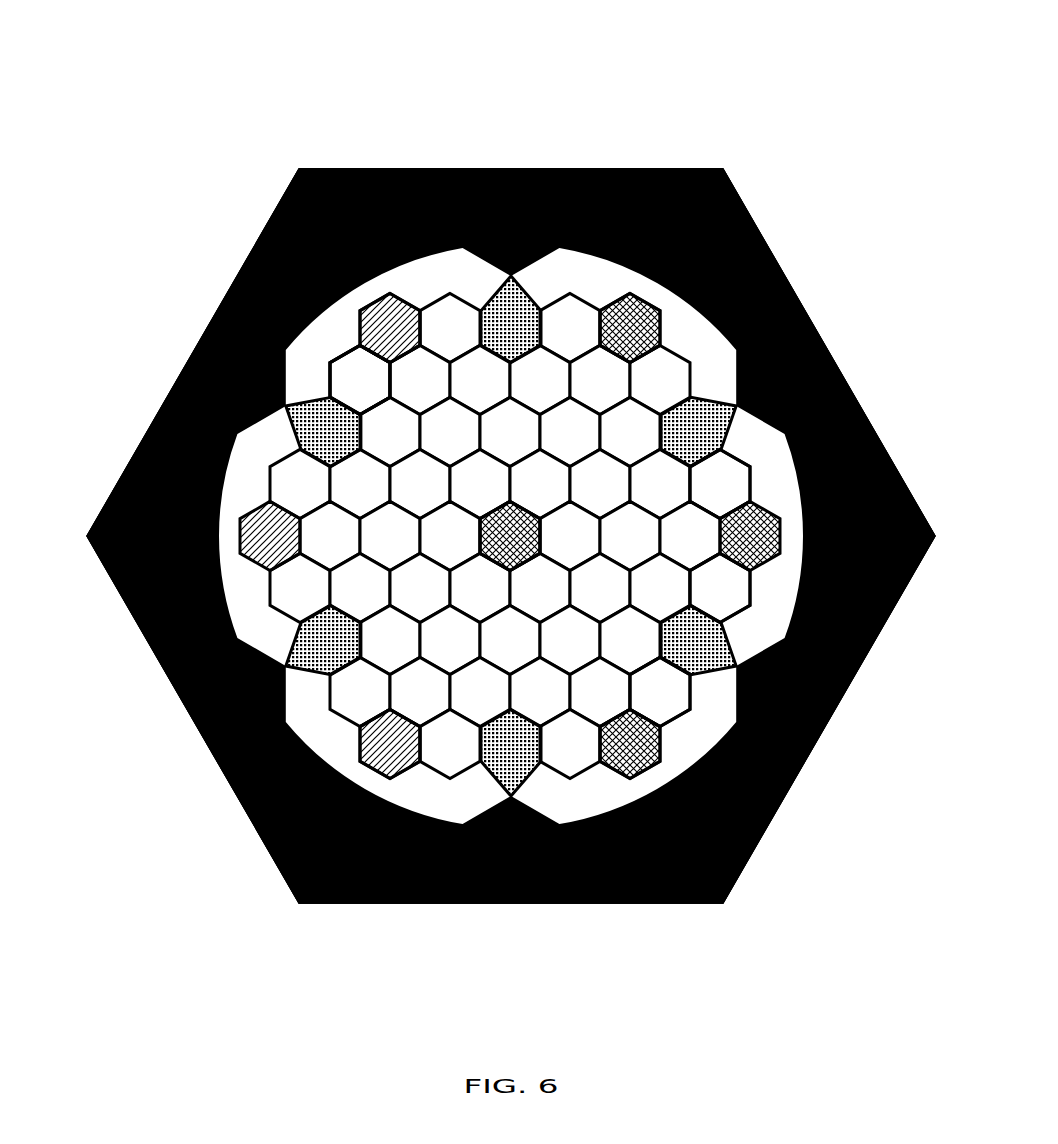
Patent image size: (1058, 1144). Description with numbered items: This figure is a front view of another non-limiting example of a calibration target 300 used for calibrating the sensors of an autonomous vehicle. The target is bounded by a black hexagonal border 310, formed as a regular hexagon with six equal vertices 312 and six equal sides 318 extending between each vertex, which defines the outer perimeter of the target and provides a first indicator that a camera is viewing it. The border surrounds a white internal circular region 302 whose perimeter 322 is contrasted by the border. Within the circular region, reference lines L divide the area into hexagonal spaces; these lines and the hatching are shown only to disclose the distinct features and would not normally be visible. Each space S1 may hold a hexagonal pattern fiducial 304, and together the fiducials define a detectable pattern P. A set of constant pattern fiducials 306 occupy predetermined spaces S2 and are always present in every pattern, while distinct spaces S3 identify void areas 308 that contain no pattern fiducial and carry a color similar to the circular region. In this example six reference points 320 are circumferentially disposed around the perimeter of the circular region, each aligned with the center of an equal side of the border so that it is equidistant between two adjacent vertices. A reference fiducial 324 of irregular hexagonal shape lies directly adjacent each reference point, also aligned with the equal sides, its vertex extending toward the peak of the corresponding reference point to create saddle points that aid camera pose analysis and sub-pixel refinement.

The calibration target 300 is at (490, 76).
The internal circular region 302 is at (705, 337).
The pattern fiducials 304 is at (334, 384).
The constant pattern fiducials 306 is at (395, 302).
The void areas 308 is at (640, 302).
The hexagonal border 310 is at (586, 170).
The vertices 312 is at (288, 160).
The equal sides 318 is at (503, 158).
The reference points 320 is at (262, 400).
The perimeter 322 is at (549, 243).
The reference fiducials 324 is at (722, 405).
The space S1 is at (318, 352).
The predetermined spaces S2 is at (382, 290).
The distinct space S3 is at (535, 538).
The pattern P is at (618, 290).
The reference lines L is at (343, 352).